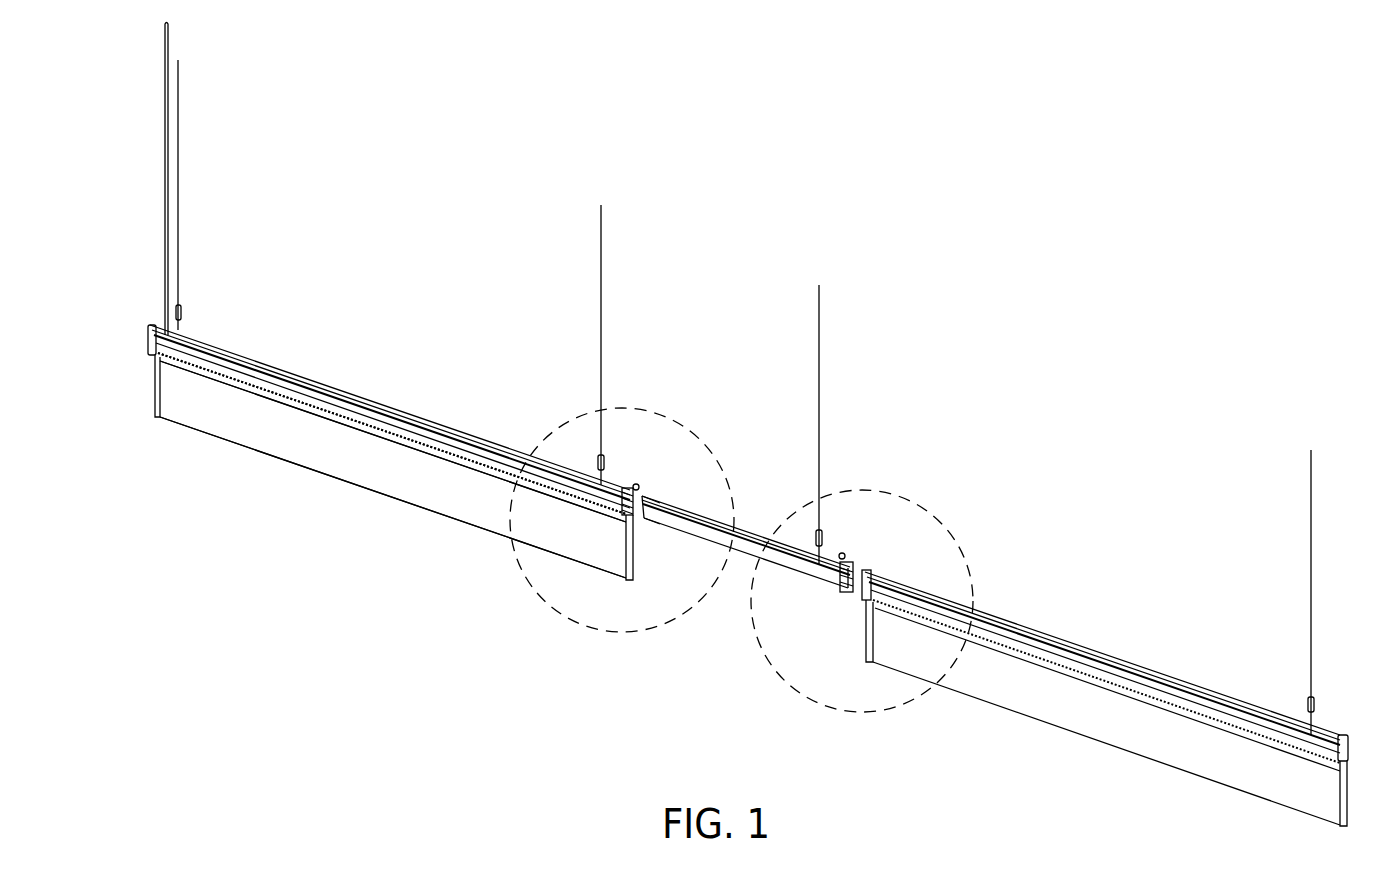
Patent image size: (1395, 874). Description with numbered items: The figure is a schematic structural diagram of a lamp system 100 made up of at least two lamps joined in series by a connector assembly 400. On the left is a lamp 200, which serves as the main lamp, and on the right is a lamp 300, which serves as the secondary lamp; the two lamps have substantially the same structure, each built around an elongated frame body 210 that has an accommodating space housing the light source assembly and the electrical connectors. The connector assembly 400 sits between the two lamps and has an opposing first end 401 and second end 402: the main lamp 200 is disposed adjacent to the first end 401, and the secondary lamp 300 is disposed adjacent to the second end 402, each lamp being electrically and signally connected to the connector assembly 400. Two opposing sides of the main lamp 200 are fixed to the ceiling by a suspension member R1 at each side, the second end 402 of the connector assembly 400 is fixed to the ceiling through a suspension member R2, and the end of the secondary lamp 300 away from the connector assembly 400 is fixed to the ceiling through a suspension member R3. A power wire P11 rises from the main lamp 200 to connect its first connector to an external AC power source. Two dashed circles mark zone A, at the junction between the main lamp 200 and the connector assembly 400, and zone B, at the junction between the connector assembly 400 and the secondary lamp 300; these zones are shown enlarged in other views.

The lamp system 100 is at (106, 74).
The lamp 200 is at (420, 388).
The frame body 210 is at (480, 458).
The lamp 300 is at (1058, 600).
The connector assembly 400 is at (762, 495).
The first end 401 is at (668, 505).
The second end 402 is at (850, 562).
The power wire P11 is at (164, 173).
The suspension member R1 is at (179, 203).
The suspension member R2 is at (820, 322).
The suspension member R3 is at (1312, 500).
The zone A is at (622, 512).
The zone B is at (862, 583).